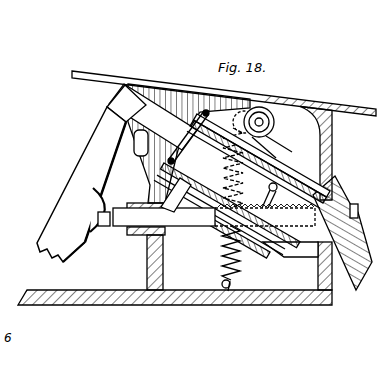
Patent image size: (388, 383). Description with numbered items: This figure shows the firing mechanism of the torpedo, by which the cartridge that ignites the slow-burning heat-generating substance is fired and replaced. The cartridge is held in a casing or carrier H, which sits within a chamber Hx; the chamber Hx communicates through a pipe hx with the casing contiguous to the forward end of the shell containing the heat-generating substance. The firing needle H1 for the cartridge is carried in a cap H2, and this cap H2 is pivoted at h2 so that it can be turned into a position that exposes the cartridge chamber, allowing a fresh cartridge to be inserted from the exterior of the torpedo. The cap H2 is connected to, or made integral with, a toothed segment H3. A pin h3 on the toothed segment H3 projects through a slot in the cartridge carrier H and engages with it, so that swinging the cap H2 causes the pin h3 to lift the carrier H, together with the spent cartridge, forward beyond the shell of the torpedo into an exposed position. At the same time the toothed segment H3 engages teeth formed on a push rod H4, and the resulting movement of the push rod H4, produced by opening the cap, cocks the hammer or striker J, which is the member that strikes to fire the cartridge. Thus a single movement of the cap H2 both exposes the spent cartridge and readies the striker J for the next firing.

The firing needle H1 is at (158, 118).
The cap H2 is at (174, 112).
The striker or hammer J is at (90, 162).
The pivot h2 is at (262, 118).
The casing or cartridge carrier H is at (288, 153).
The chamber Hx is at (330, 183).
The toothed segment H3 is at (357, 214).
The pin h3 is at (271, 191).
The pipe hx is at (354, 282).
The push rod H4 is at (183, 220).